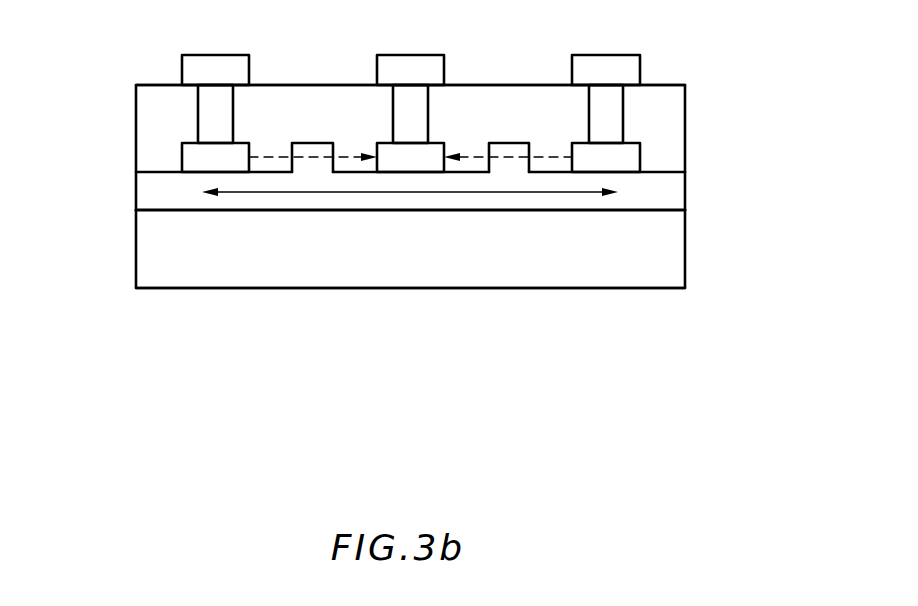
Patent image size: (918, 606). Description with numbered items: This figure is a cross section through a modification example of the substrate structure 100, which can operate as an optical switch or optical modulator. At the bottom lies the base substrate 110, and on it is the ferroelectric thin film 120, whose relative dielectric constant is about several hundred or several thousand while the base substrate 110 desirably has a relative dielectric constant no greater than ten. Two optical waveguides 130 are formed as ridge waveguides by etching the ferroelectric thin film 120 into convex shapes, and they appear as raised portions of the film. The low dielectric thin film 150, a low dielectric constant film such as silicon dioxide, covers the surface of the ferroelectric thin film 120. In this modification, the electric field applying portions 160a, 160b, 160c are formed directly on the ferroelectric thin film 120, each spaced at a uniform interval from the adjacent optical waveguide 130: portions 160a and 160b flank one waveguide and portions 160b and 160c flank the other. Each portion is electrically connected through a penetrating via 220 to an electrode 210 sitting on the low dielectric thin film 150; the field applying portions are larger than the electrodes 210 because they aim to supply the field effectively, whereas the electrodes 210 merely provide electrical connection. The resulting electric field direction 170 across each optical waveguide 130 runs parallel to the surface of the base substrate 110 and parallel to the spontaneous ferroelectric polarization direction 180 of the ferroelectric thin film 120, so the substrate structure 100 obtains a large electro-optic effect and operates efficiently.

The substrate structure 100 is at (430, 451).
The base substrate 110 is at (685, 245).
The ferroelectric thin film 120 is at (685, 187).
The optical waveguide 130 is at (314, 180).
The low dielectric thin film 150 is at (685, 126).
The electric field applying portion 160a is at (182, 159).
The electric field applying portion 160b is at (385, 142).
The electric field applying portion 160c is at (583, 140).
The electric field direction 170 is at (348, 146).
The spontaneous ferroelectric polarization direction 180 is at (256, 205).
The electrode 210 is at (213, 55).
The penetrating via 220 is at (197, 116).